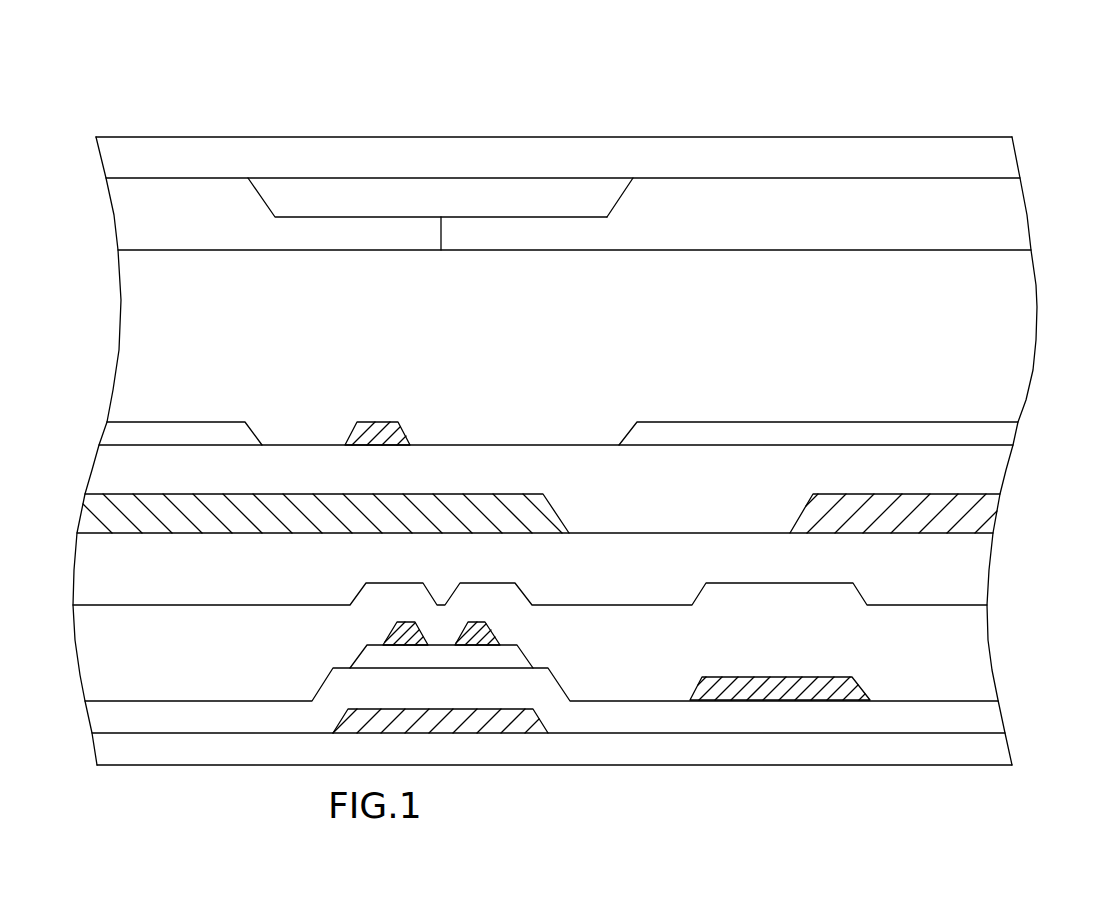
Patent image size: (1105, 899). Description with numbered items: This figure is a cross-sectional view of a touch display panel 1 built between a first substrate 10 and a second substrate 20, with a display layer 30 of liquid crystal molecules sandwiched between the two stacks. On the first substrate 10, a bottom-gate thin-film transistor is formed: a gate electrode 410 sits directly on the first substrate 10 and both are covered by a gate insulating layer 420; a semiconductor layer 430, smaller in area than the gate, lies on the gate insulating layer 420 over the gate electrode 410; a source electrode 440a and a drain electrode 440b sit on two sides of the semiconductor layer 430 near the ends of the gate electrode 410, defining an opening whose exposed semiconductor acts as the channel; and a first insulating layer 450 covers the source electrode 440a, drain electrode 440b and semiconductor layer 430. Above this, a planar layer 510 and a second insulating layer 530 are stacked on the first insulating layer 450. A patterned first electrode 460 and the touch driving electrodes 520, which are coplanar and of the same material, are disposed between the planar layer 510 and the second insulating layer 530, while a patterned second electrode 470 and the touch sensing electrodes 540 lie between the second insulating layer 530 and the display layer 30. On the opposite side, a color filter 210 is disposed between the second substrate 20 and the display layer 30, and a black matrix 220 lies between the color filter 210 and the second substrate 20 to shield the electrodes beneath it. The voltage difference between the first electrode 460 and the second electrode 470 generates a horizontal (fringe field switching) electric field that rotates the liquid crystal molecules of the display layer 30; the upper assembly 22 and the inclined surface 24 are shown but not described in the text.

The touch display panel 1 is at (103, 66).
The first substrate 10 is at (985, 748).
The second substrate 20 is at (992, 157).
The upper substrate assembly 22 is at (513, 133).
The inclined surface 24 is at (565, 180).
The display layer 30 is at (1005, 367).
The color filter 210 is at (998, 212).
The black matrix 220 is at (596, 195).
The gate electrode 410 is at (492, 725).
The gate insulating layer 420 is at (978, 716).
The semiconductor layer 430 is at (507, 655).
The source electrode 440a is at (387, 638).
The drain electrode 440b is at (458, 641).
The first insulating layer 450 is at (968, 652).
The first electrode 460 is at (985, 513).
The second electrode 470 is at (185, 433).
The planar layer 510 is at (962, 572).
The driving electrodes 520 is at (535, 508).
The second insulating layer 530 is at (980, 470).
The sensing electrodes 540 is at (395, 430).